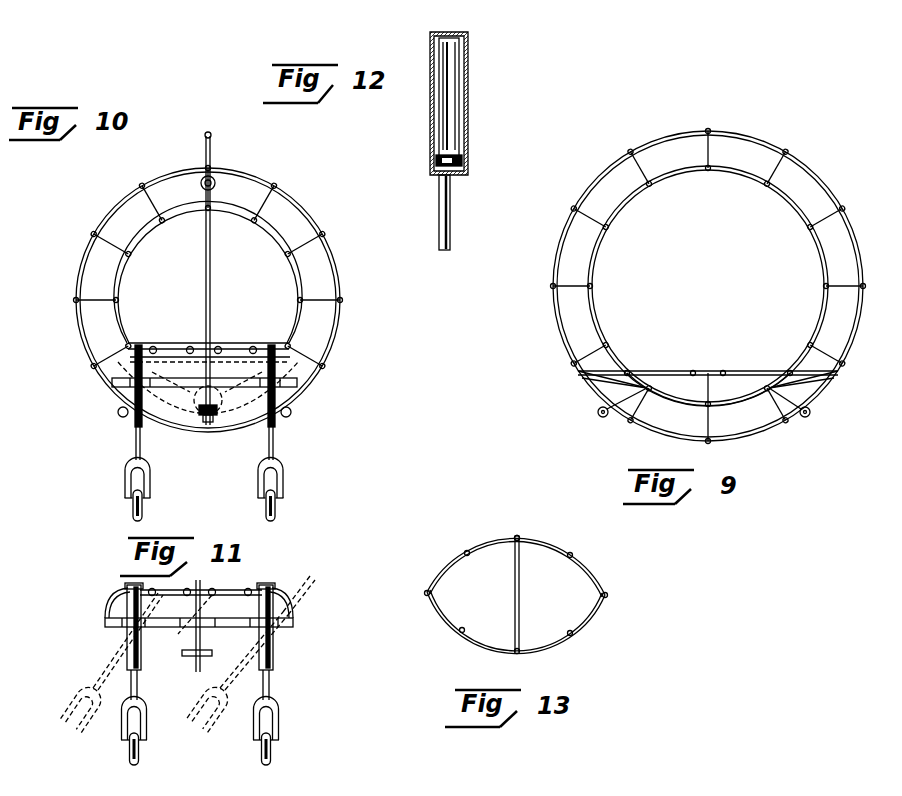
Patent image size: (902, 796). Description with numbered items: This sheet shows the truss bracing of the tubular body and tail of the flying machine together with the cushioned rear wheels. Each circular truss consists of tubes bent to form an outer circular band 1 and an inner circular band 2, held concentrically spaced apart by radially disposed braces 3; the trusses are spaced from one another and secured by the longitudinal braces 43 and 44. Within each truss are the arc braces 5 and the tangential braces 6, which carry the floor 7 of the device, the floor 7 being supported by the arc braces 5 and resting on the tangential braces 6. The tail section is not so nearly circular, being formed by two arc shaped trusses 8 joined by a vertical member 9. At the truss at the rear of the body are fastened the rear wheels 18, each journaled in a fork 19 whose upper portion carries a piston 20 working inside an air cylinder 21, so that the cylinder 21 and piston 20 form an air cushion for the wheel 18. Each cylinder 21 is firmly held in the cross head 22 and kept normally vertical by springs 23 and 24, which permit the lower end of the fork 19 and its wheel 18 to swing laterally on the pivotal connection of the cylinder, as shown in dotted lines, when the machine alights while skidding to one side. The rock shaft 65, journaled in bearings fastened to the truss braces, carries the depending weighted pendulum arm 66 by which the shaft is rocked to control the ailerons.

In FIG. 9, the circular band 1 is at (763, 144).
In FIG. 10, the circular band 1 is at (301, 206).
In FIG. 9, the circular band 2 is at (708, 286).
In FIG. 10, the circular band 2 is at (281, 242).
In FIG. 9, the radially disposed brace 3 is at (705, 153).
In FIG. 10, the radially disposed brace 3 is at (304, 252).
In FIG. 9, the arc brace 5 is at (669, 384).
In FIG. 9, the tangential brace 6 is at (578, 385).
In FIG. 9, the floor 7 is at (657, 372).
In FIG. 13, the arc shaped truss 8 is at (485, 542).
In FIG. 13, the center bar 9 is at (523, 591).
In FIG. 10, the rear wheel 18 is at (131, 504).
In FIG. 11, the rear wheel 18 is at (140, 747).
In FIG. 10, the fork 19 is at (133, 447).
In FIG. 12, the fork 19 is at (448, 234).
In FIG. 11, the fork 19 is at (137, 686).
In FIG. 12, the piston 20 is at (432, 166).
In FIG. 10, the air cylinder 21 is at (145, 427).
In FIG. 12, the air cylinder 21 is at (468, 112).
In FIG. 11, the air cylinder 21 is at (127, 640).
In FIG. 10, the cross head 22 is at (300, 387).
In FIG. 11, the cross head 22 is at (295, 624).
In FIG. 11, the spring 23 is at (117, 600).
In FIG. 11, the spring 24 is at (190, 627).
In FIG. 9, the longitudinal brace 43 is at (550, 288).
In FIG. 10, the longitudinal brace 43 is at (75, 299).
In FIG. 13, the longitudinal brace 43 is at (521, 537).
In FIG. 9, the longitudinal brace 44 is at (594, 287).
In FIG. 10, the longitudinal brace 44 is at (118, 297).
In FIG. 10, the rock shaft 65 is at (215, 185).
In FIG. 10, the weighted pendulum arm 66 is at (205, 295).